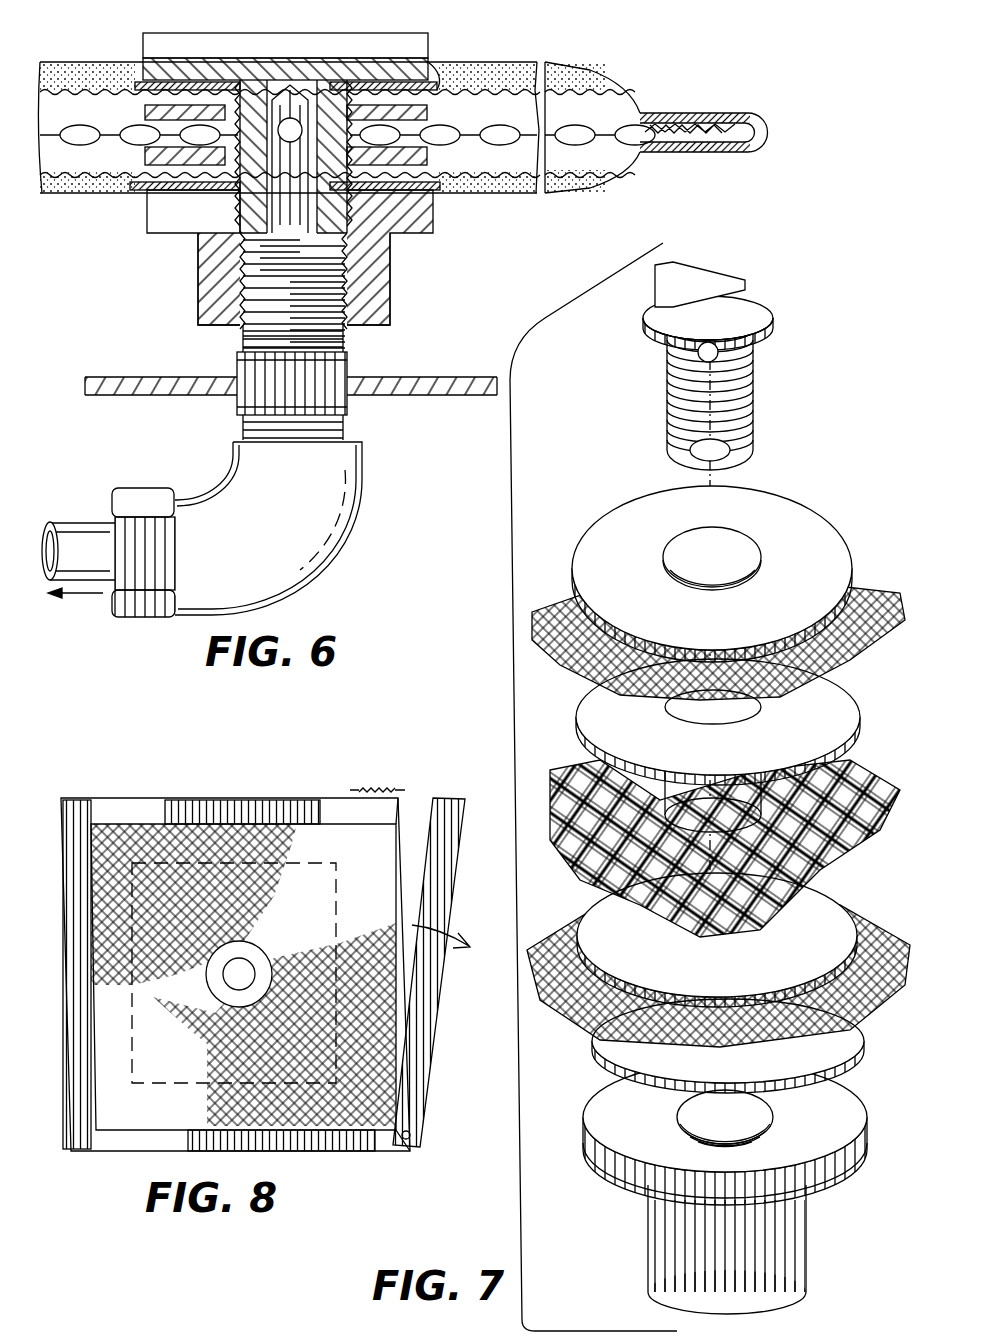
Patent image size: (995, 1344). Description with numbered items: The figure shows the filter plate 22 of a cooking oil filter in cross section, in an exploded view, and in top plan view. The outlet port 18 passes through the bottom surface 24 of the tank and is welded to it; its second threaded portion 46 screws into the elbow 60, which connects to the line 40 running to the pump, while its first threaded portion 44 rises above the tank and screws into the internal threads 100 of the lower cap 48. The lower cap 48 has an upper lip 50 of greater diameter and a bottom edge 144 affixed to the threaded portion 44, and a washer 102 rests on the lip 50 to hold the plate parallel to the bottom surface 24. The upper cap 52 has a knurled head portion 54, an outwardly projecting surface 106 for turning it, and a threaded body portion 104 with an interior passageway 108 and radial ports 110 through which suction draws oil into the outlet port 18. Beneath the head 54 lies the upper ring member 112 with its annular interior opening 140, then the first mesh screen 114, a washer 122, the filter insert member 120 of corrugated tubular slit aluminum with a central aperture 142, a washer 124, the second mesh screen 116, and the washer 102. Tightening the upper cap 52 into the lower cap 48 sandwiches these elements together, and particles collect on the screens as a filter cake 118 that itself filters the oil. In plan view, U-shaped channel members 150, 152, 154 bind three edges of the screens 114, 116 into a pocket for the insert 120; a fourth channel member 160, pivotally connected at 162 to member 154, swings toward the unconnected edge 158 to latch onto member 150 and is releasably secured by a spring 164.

In FIG. 6, the outlet port 18 is at (347, 368).
In FIG. 6, the filter plate 22 is at (643, 115).
In FIG. 8, the filter plate 22 is at (157, 798).
In FIG. 6, the bottom surface 24 is at (415, 395).
In FIG. 6, the line 40 is at (90, 518).
In FIG. 6, the first threaded portion 44 is at (345, 345).
In FIG. 6, the second threaded portion 46 is at (352, 432).
In FIG. 6, the lower cap 48 is at (390, 262).
In FIG. 7, the lower cap 48 is at (598, 1090).
In FIG. 6, the upper lip 50 is at (415, 233).
In FIG. 7, the upper lip 50 is at (585, 1152).
In FIG. 6, the upper cap 52 is at (402, 33).
In FIG. 7, the upper cap 52 is at (642, 323).
In FIG. 6, the head portion 54 is at (437, 70).
In FIG. 7, the head portion 54 is at (765, 308).
In FIG. 6, the elbow 60 is at (345, 503).
In FIG. 6, the internal threads 100 is at (385, 306).
In FIG. 7, the internal threads 100 is at (680, 1112).
In FIG. 6, the washer 102 is at (445, 180).
In FIG. 7, the washer 102 is at (592, 1028).
In FIG. 6, the threaded body portion 104 is at (240, 215).
In FIG. 7, the threaded body portion 104 is at (665, 400).
In FIG. 6, the outwardly projecting surface 106 is at (432, 55).
In FIG. 6, the interior passageway 108 is at (245, 240).
In FIG. 6, the ports 110 is at (265, 85).
In FIG. 7, the ports 110 is at (700, 355).
In FIG. 6, the upper ring member 112 is at (460, 78).
In FIG. 7, the upper ring member 112 is at (593, 533).
In FIG. 6, the first mesh screen 114 is at (78, 92).
In FIG. 7, the first mesh screen 114 is at (565, 603).
In FIG. 6, the second mesh screen 116 is at (110, 193).
In FIG. 7, the second mesh screen 116 is at (560, 978).
In FIG. 6, the filter cake 118 is at (110, 62).
In FIG. 6, the filter insert member 120 is at (633, 155).
In FIG. 7, the filter insert member 120 is at (577, 790).
In FIG. 6, the washer 122 is at (445, 112).
In FIG. 7, the washer 122 is at (583, 684).
In FIG. 6, the washer 124 is at (470, 192).
In FIG. 7, the washer 124 is at (583, 888).
In FIG. 7, the annular interior opening 140 is at (680, 542).
In FIG. 7, the central aperture 142 is at (740, 805).
In FIG. 7, the bottom edge 144 is at (648, 1252).
In FIG. 8, the channel member 150 is at (225, 798).
In FIG. 8, the channel member 152 is at (76, 815).
In FIG. 8, the channel member 154 is at (338, 1151).
In FIG. 8, the unconnected edge 158 is at (402, 822).
In FIG. 8, the channel member 160 is at (435, 1034).
In FIG. 8, the pivot connection 162 is at (420, 1132).
In FIG. 8, the spring 164 is at (360, 788).